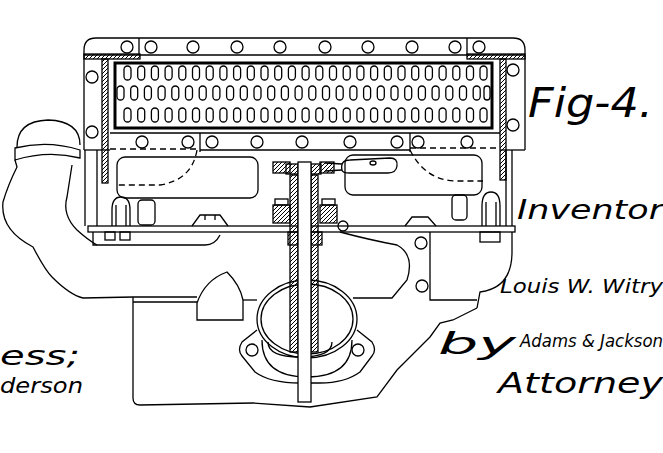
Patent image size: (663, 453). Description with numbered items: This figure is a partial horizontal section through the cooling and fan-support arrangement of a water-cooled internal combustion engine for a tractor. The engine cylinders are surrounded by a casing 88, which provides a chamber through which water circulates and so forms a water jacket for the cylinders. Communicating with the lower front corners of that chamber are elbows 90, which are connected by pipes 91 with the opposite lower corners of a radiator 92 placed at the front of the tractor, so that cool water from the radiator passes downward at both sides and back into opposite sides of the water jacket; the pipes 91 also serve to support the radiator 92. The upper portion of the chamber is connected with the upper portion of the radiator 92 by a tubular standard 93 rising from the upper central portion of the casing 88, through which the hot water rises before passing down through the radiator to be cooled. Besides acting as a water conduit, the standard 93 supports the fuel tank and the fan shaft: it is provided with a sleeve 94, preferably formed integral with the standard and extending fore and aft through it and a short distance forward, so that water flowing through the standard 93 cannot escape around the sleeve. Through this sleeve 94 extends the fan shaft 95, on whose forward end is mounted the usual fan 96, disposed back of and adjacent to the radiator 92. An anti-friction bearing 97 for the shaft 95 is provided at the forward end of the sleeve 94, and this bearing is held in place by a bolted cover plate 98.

The casing 88 is at (147, 369).
The elbows 90 is at (97, 243).
The pipes 91 is at (107, 188).
The radiator 92 is at (480, 75).
The tubular standard 93 is at (353, 313).
The sleeve 94 is at (320, 303).
The fan shaft 95 is at (305, 258).
The fan 96 is at (410, 177).
The anti-friction bearing 97 is at (274, 209).
The bolted cover plate 98 is at (315, 203).